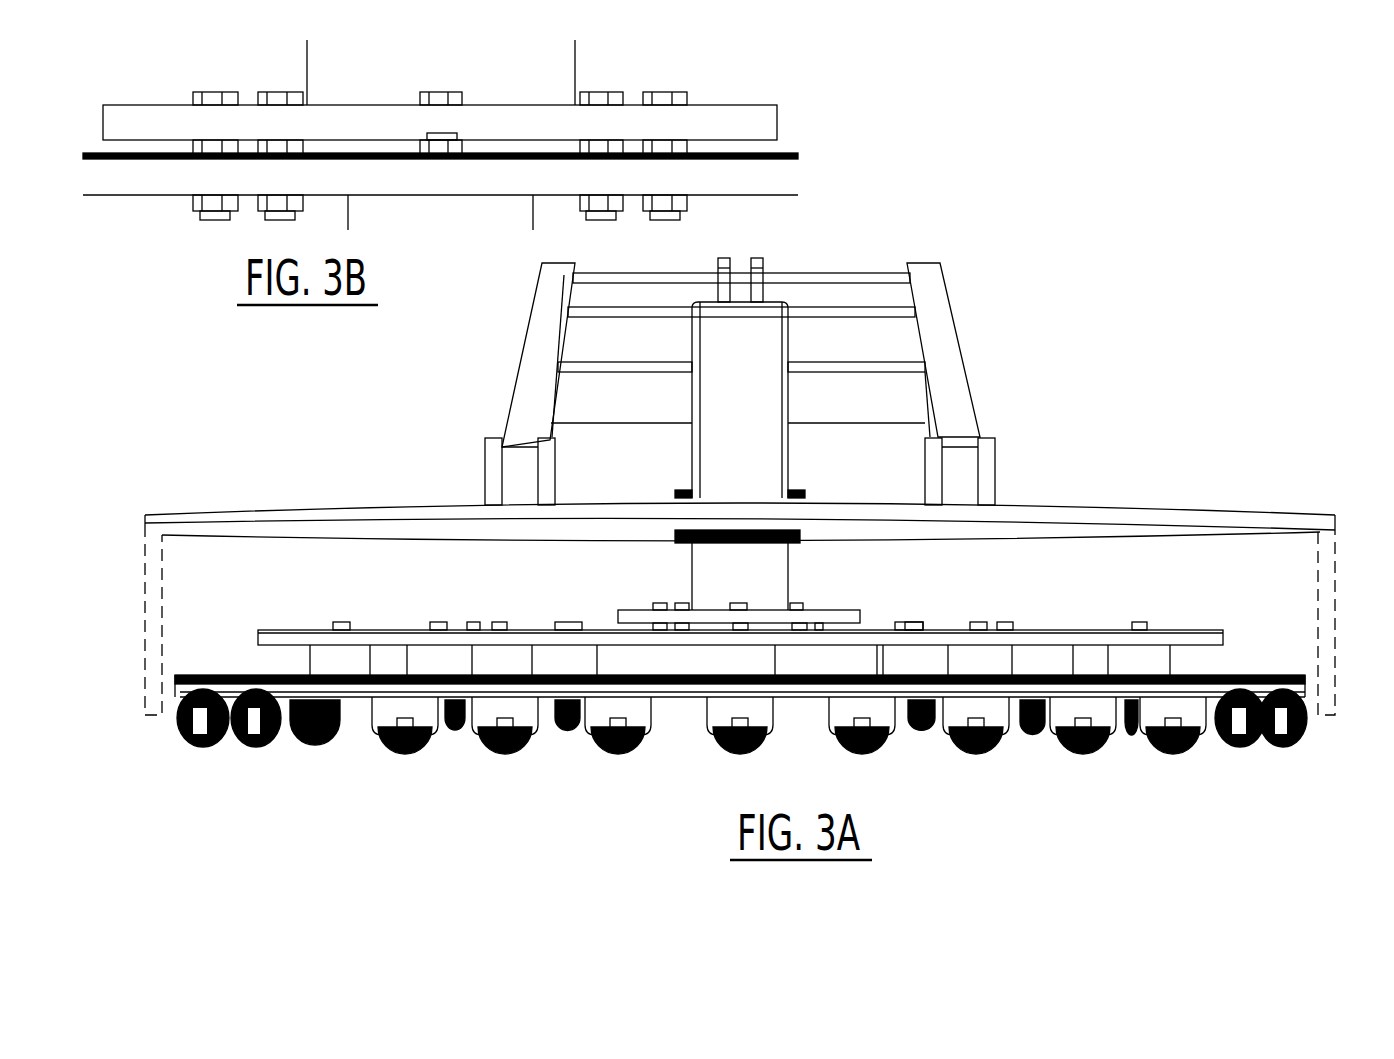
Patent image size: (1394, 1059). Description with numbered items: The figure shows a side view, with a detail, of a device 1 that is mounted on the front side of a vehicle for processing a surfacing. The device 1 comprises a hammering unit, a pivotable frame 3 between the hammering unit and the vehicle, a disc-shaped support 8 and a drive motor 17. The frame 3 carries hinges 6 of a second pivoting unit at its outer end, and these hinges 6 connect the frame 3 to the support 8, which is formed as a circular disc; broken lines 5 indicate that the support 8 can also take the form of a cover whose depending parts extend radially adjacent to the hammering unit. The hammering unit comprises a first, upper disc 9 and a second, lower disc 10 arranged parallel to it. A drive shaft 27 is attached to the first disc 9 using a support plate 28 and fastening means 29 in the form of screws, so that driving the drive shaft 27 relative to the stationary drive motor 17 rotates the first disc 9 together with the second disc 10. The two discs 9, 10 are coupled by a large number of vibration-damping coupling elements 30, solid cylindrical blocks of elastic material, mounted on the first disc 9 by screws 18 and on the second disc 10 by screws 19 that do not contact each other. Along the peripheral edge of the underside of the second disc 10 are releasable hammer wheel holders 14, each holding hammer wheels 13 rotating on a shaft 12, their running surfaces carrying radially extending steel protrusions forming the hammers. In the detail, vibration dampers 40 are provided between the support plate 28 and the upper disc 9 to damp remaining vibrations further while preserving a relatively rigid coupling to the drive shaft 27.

In FIG. 3A, the device 1 is at (577, 770).
In FIG. 3A, the pivotable frame 3 is at (648, 334).
In FIG. 3A, the broken lines 5 is at (150, 568).
In FIG. 3A, the hinges 6 is at (988, 445).
In FIG. 3A, the support 8 is at (1088, 516).
In FIG. 3A, the first disc 9 is at (1098, 643).
In FIG. 3A, the second disc 10 is at (383, 692).
In FIG. 3A, the shaft 12 is at (918, 590).
In FIG. 3A, the hammer wheels 13 is at (1160, 742).
In FIG. 3A, the hammer wheel holders 14 is at (1184, 727).
In FIG. 3A, the drive motor 17 is at (722, 450).
In FIG. 3A, the screws 18 is at (450, 625).
In FIG. 3A, the screws 19 is at (413, 665).
In FIG. 3B, the drive shaft 27 is at (312, 60).
In FIG. 3A, the drive shaft 27 is at (704, 570).
In FIG. 3B, the support plate 28 is at (353, 118).
In FIG. 3A, the support plate 28 is at (713, 622).
In FIG. 3B, the fastening means 29 is at (657, 96).
In FIG. 3A, the fastening means 29 is at (815, 608).
In FIG. 3A, the coupling elements 30 is at (1031, 645).
In FIG. 3B, the vibration dampers 40 is at (680, 147).
In FIG. 3A, the vibration dampers 40 is at (826, 627).